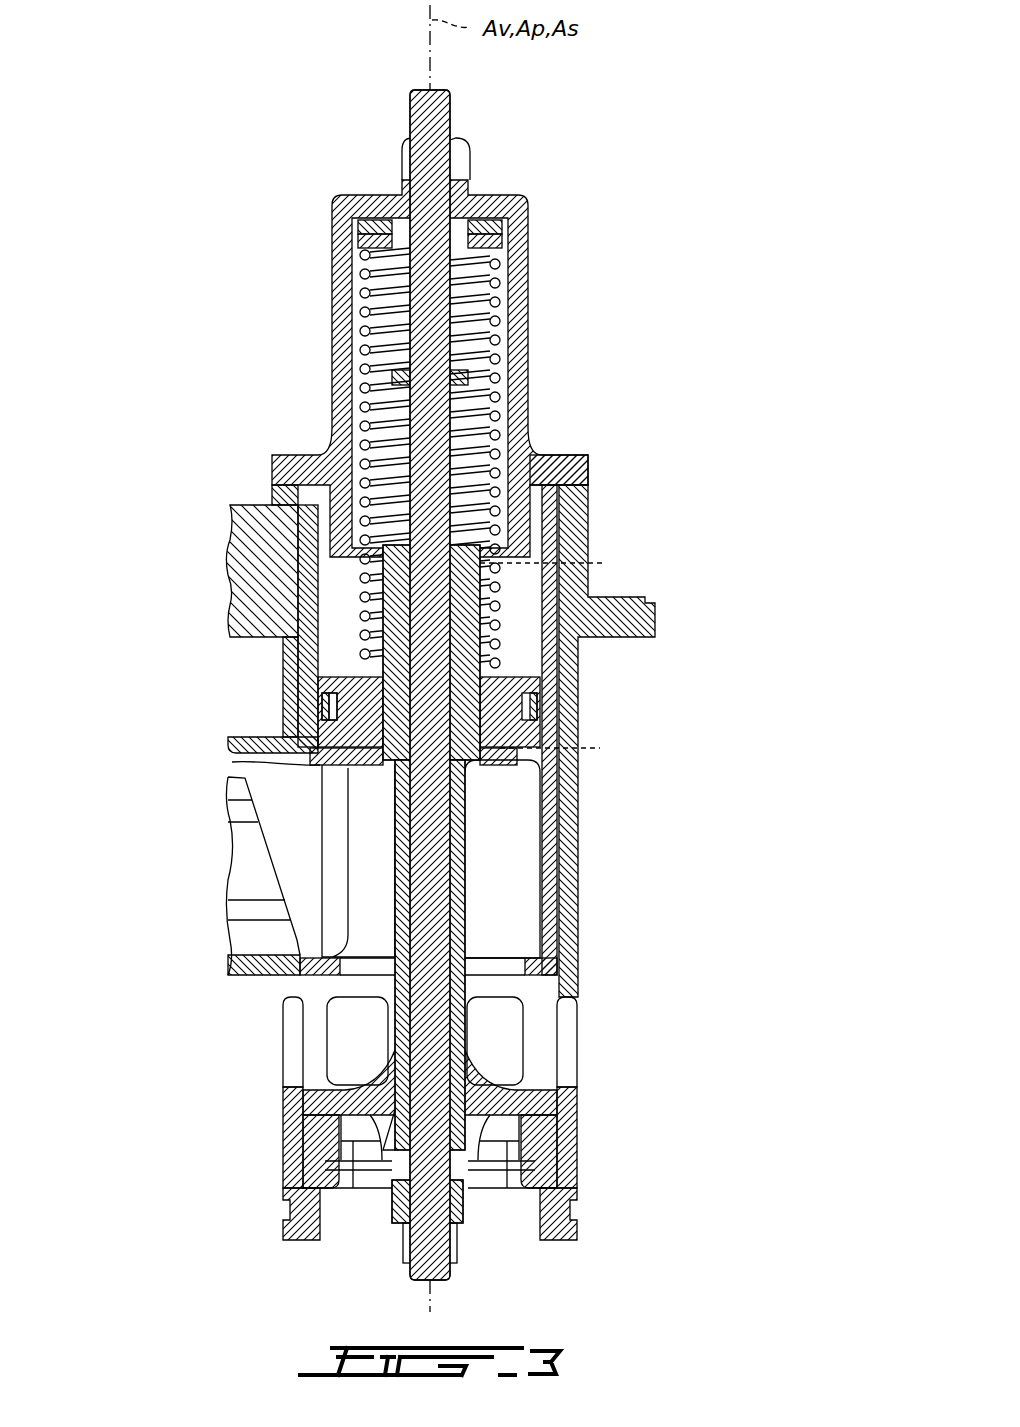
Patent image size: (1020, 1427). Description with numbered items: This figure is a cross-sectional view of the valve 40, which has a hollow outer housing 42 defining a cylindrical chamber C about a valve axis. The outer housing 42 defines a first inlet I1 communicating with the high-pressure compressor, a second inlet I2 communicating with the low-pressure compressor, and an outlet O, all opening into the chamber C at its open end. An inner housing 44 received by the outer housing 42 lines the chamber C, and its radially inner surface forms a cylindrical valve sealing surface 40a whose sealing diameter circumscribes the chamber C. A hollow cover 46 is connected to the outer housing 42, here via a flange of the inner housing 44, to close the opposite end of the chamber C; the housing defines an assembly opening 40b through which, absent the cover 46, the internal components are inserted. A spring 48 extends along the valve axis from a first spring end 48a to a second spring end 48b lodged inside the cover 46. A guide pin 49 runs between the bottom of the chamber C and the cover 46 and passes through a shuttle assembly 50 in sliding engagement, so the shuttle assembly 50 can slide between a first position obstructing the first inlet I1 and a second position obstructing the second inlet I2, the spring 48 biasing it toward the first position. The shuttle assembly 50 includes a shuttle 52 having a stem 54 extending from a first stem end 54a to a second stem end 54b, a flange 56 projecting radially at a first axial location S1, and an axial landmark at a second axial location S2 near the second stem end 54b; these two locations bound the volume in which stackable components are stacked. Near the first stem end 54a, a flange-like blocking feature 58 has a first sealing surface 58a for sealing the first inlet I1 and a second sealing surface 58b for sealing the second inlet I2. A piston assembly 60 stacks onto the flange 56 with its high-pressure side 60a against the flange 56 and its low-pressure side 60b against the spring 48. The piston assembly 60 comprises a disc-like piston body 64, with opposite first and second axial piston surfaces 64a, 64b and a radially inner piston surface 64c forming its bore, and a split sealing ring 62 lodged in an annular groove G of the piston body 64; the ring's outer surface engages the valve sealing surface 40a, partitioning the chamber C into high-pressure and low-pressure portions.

The valve 40 is at (205, 118).
The outer housing 42 is at (240, 514).
The inner housing 44 is at (272, 490).
The cover 46 is at (300, 455).
The spring 48 is at (492, 362).
The first spring end 48a is at (500, 655).
The second spring end 48b is at (358, 262).
The guide pin 49 is at (452, 118).
The valve sealing surface 40a is at (538, 595).
The assembly opening 40b is at (548, 480).
The shuttle assembly 50 is at (784, 916).
The shuttle 52 is at (683, 766).
The stem 54 is at (468, 935).
The first stem end 54a is at (460, 1162).
The second stem end 54b is at (468, 560).
The flange 56 is at (540, 760).
The blocking feature 58 is at (557, 1102).
The first sealing surface 58a is at (557, 1125).
The second sealing surface 58b is at (557, 1090).
The piston assembly 60 is at (683, 678).
The high-pressure side 60a is at (360, 762).
The low-pressure side 60b is at (345, 664).
The sealing ring 62 is at (552, 697).
The piston body 64 is at (552, 730).
The first axial piston surface 64a is at (240, 757).
The second axial piston surface 64b is at (330, 680).
The radially inner piston surface 64c is at (300, 727).
The annular groove G is at (333, 705).
The chamber C is at (512, 845).
The outlet O is at (312, 1060).
The first inlet I1 is at (365, 1198).
The second inlet I2 is at (250, 867).
The first axial location S1 is at (566, 752).
The second axial location S2 is at (559, 567).